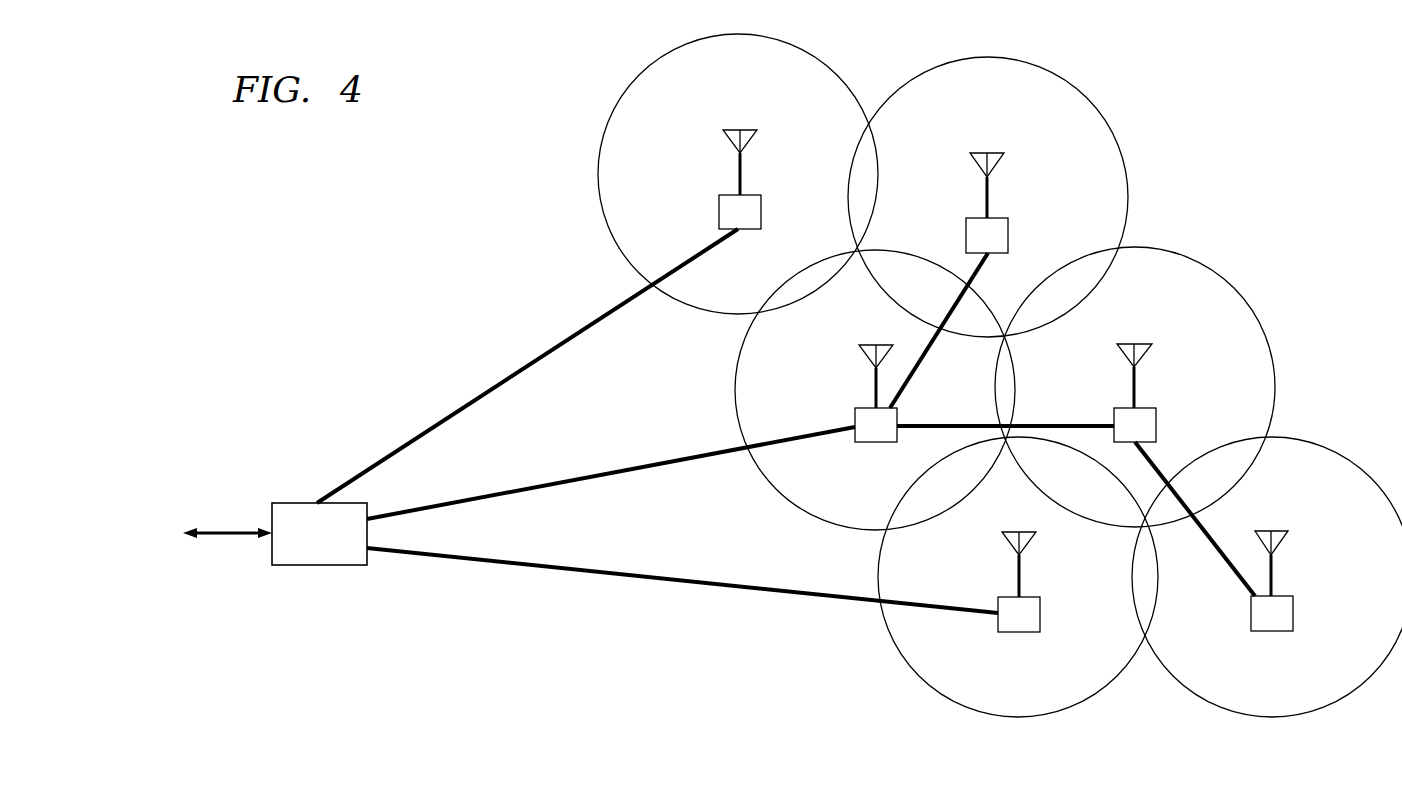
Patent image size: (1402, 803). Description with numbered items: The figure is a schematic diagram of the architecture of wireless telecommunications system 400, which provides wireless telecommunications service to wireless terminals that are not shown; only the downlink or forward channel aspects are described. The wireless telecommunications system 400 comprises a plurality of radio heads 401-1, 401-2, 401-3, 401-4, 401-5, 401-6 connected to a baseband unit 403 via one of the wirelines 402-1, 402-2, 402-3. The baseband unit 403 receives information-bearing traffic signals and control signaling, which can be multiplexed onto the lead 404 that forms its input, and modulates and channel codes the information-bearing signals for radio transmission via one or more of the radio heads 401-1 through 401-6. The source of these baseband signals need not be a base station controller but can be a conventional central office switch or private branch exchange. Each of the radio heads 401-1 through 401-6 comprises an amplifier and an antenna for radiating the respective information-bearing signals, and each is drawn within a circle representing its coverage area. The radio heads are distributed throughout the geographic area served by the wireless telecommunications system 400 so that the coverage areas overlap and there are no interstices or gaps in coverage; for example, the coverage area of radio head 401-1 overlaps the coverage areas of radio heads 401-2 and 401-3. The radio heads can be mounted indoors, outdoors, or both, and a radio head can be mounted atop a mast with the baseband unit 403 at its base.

The wireless telecommunications system 400 is at (391, 210).
The radio head 401-1 is at (740, 172).
The radio head 401-2 is at (987, 195).
The radio head 401-3 is at (876, 390).
The radio head 401-4 is at (1134, 386).
The radio head 401-5 is at (1019, 574).
The radio head 401-6 is at (1271, 574).
The wireline 402-1 is at (408, 440).
The wireline 402-2 is at (483, 495).
The wireline 402-3 is at (500, 562).
The baseband unit 403 is at (290, 503).
The lead 404 is at (222, 535).